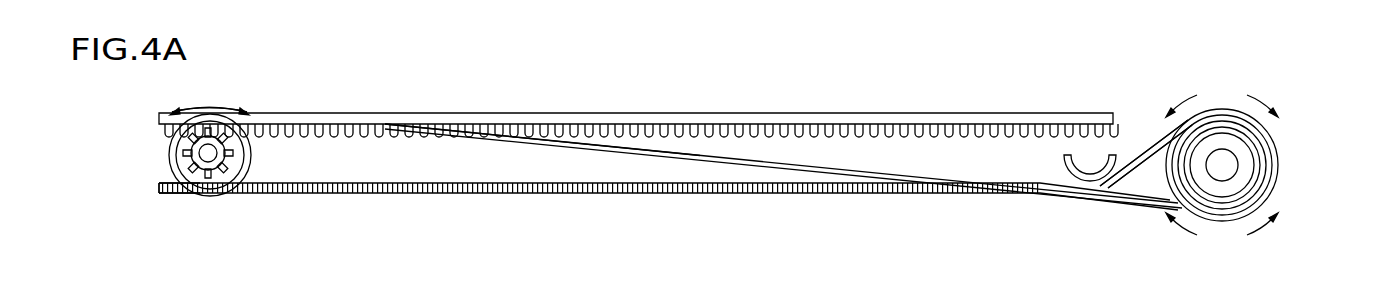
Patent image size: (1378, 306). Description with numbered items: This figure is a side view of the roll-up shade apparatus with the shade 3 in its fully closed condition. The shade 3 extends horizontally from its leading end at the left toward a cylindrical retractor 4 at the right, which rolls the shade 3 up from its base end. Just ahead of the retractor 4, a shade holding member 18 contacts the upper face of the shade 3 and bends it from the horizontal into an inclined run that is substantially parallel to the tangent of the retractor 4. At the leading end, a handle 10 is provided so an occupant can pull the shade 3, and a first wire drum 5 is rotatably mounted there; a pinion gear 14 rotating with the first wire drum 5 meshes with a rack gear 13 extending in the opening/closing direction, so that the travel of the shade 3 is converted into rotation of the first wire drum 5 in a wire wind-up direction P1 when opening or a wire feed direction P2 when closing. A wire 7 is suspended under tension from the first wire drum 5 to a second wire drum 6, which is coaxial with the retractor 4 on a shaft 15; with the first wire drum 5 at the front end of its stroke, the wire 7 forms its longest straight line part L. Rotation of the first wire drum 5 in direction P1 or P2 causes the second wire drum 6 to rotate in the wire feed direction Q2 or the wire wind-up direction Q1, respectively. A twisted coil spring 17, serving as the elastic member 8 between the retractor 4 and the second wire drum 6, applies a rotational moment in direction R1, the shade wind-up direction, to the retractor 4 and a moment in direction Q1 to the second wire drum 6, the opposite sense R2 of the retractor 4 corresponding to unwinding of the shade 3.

The shade 3 is at (731, 193).
The retractor 4 is at (1262, 181).
The first wire drum 5 is at (170, 163).
The second wire drum 6 is at (1233, 185).
The wire 7 is at (679, 158).
The elastic member 8 is at (1146, 154).
The handle 10 is at (168, 194).
The rack gear 13 is at (505, 123).
The pinion gear 14 is at (212, 171).
The shaft 15 is at (1222, 166).
The twisted coil spring 17 is at (1268, 126).
The shade holding member 18 is at (1103, 163).
The longest straight line part L is at (585, 150).
The wire wind-up direction of the first wire drum P1 is at (195, 98).
The wire feed direction of the first wire drum P2 is at (245, 112).
The shade wind-up direction of the retractor R1 is at (1262, 93).
The shade feed direction of the retractor R2 is at (1184, 93).
The wire wind-up direction of the second wire drum Q1 is at (1263, 239).
The wire feed direction of the second wire drum Q2 is at (1185, 239).